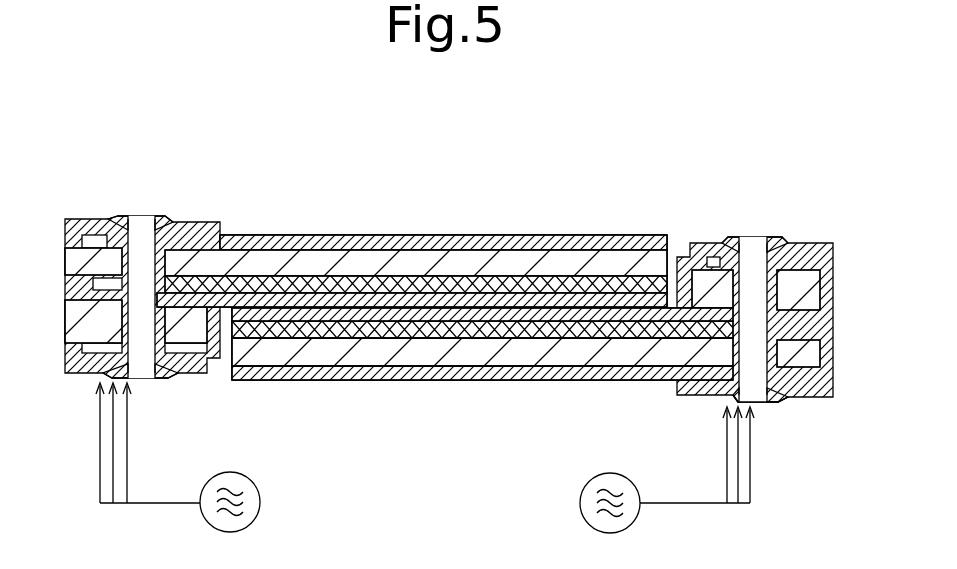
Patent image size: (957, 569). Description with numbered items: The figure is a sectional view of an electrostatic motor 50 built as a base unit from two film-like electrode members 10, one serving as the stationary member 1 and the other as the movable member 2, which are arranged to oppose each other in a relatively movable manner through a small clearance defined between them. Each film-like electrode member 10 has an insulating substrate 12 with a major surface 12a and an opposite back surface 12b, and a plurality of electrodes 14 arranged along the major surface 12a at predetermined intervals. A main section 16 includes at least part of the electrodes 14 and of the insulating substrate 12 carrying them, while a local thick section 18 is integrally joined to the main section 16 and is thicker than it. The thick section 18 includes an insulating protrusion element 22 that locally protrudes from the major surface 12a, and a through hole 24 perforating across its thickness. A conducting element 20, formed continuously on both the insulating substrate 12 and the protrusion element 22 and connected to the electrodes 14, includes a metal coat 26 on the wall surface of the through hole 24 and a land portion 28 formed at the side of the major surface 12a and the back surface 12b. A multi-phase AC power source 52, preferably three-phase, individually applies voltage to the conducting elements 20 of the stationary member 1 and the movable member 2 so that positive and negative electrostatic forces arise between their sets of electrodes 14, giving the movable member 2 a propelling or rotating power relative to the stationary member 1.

The stationary member 1 is at (480, 386).
The movable member 2 is at (450, 233).
The film-like electrode member 10 is at (558, 232).
The insulating substrate 12 is at (500, 262).
The major surface 12a is at (437, 335).
The back surface 12b is at (612, 370).
The electrodes 14 is at (297, 283).
The main section 16 is at (355, 233).
The thick section 18 is at (62, 332).
The conducting element 20 is at (116, 213).
The protrusion element 22 is at (82, 315).
The through hole 24 is at (140, 228).
The metal coat 26 is at (760, 402).
The land portion 28 is at (790, 240).
The electrostatic motor 50 is at (635, 190).
The multi-phase AC power source 52 is at (260, 510).